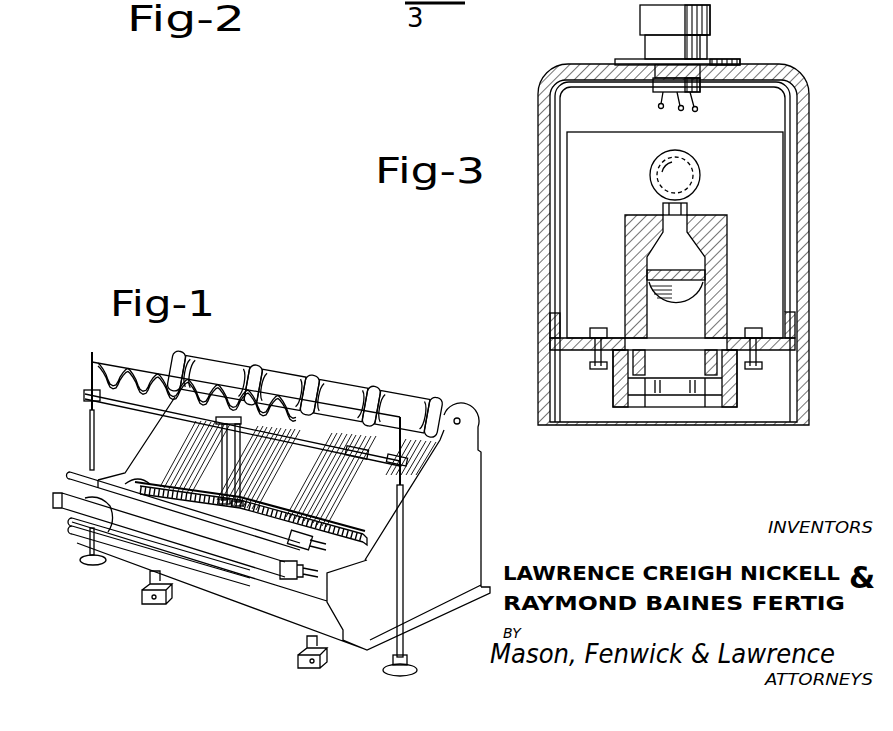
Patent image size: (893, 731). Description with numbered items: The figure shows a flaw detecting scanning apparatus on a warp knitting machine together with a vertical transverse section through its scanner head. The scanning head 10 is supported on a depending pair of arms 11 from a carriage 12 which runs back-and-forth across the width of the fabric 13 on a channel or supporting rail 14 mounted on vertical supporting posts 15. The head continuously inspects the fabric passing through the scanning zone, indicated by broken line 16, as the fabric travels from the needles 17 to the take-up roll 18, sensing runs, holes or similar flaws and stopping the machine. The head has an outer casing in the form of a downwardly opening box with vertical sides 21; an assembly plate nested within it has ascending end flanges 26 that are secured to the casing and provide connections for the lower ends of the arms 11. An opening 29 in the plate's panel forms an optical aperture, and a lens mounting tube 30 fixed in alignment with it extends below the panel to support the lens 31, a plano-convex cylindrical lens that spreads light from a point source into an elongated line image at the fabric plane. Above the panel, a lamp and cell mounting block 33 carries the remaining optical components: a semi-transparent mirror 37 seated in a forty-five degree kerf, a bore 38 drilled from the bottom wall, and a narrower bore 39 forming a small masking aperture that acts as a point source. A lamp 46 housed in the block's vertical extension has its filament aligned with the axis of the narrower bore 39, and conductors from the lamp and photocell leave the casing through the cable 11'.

In FIG. 1, the scanning head 10 is at (255, 496).
In FIG. 1, the arms 11 is at (229, 459).
In FIG. 1, the cable 11' is at (252, 483).
In FIG. 1, the carriage 12 is at (243, 408).
In FIG. 1, the fabric 13 is at (383, 500).
In FIG. 1, the supporting rail 14 is at (305, 447).
In FIG. 1, the vertical supporting posts 15 is at (88, 440).
In FIG. 1, the scanning zone 16 is at (144, 490).
In FIG. 1, the needles 17 is at (362, 534).
In FIG. 1, the take-up roll 18 is at (103, 504).
In FIG. 3, the vertical sides 21 is at (538, 232).
In FIG. 3, the end flanges 26 is at (624, 131).
In FIG. 3, the opening 29 is at (720, 348).
In FIG. 3, the lens mounting tube 30 is at (738, 400).
In FIG. 3, the lens 31 is at (683, 398).
In FIG. 3, the lamp and cell mounting block 33 is at (727, 246).
In FIG. 3, the semi-transparent mirror 37 is at (705, 274).
In FIG. 3, the bore 38 is at (693, 331).
In FIG. 3, the narrower bore 39 is at (683, 212).
In FIG. 3, the lamp 46 is at (700, 165).